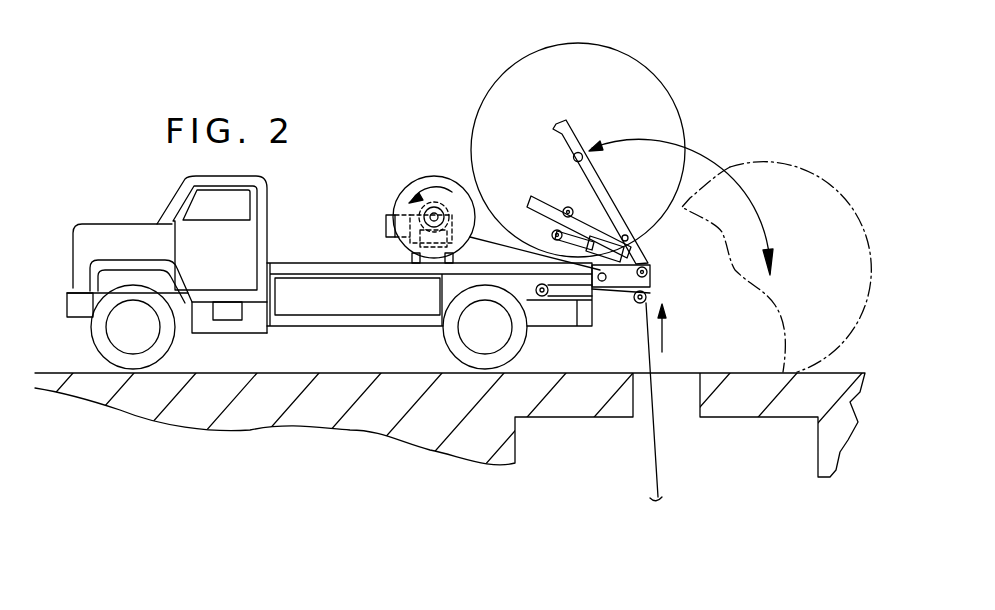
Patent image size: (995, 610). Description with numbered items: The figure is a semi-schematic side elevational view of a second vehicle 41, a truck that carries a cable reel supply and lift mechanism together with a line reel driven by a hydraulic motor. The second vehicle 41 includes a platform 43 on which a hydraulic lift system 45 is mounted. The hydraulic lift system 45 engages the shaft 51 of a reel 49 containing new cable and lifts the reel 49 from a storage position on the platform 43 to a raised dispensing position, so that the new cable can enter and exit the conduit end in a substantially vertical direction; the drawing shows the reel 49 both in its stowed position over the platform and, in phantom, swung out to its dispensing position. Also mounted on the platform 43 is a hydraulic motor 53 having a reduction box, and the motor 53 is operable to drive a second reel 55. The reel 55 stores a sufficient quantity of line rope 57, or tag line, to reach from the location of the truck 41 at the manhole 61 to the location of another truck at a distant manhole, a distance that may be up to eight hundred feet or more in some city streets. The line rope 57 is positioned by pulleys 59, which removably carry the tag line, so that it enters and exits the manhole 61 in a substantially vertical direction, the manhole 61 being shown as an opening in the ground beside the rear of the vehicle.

The second vehicle 41 is at (97, 222).
The platform 43 is at (321, 262).
The hydraulic lift system 45 is at (645, 187).
The reel 49 is at (638, 62).
The shaft 51 is at (573, 156).
The hydraulic motor 53 is at (386, 214).
The reel 55 is at (430, 176).
The line rope 57 is at (654, 460).
The pulleys 59 is at (584, 301).
The manhole 61 is at (697, 380).